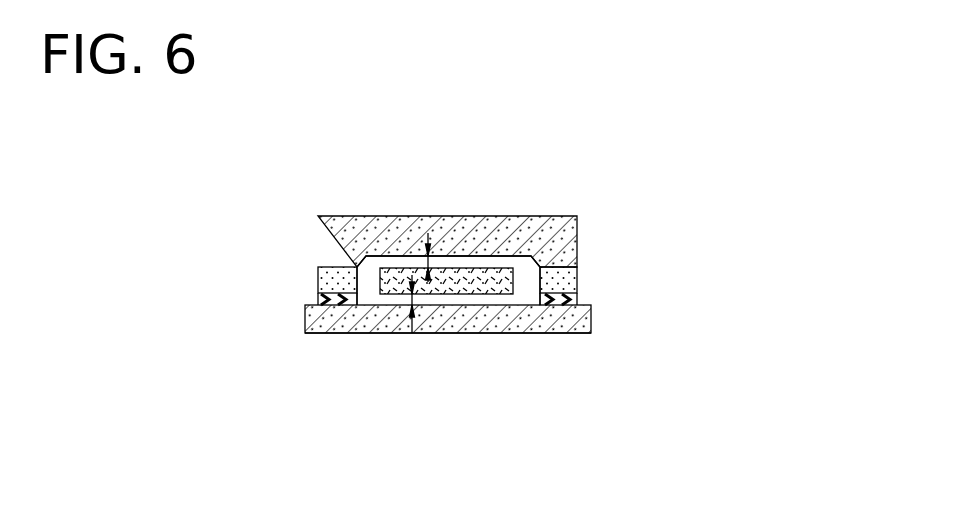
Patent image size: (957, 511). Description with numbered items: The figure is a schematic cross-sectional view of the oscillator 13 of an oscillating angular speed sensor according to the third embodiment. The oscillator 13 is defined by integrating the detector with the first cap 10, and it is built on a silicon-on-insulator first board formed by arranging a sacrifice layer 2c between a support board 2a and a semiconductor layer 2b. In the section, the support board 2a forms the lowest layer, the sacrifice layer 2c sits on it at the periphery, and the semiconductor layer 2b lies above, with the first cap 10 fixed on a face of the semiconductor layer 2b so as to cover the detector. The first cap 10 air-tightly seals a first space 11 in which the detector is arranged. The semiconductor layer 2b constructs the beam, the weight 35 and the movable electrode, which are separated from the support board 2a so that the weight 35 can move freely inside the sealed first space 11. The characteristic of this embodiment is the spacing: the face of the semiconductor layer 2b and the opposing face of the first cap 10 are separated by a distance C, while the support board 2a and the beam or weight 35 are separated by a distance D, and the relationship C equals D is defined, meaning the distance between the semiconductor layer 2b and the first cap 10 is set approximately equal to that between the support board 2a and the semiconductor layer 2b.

The first cap 10 is at (492, 209).
The semiconductor layer 2b is at (572, 282).
The sacrifice layer 2c is at (578, 300).
The support board 2a is at (591, 327).
The first space 11 is at (525, 281).
The oscillator 13 is at (372, 340).
The weight 35 is at (460, 300).
The distance between semiconductor layer face and first cap C is at (427, 260).
The distance between support board and beam D is at (412, 299).